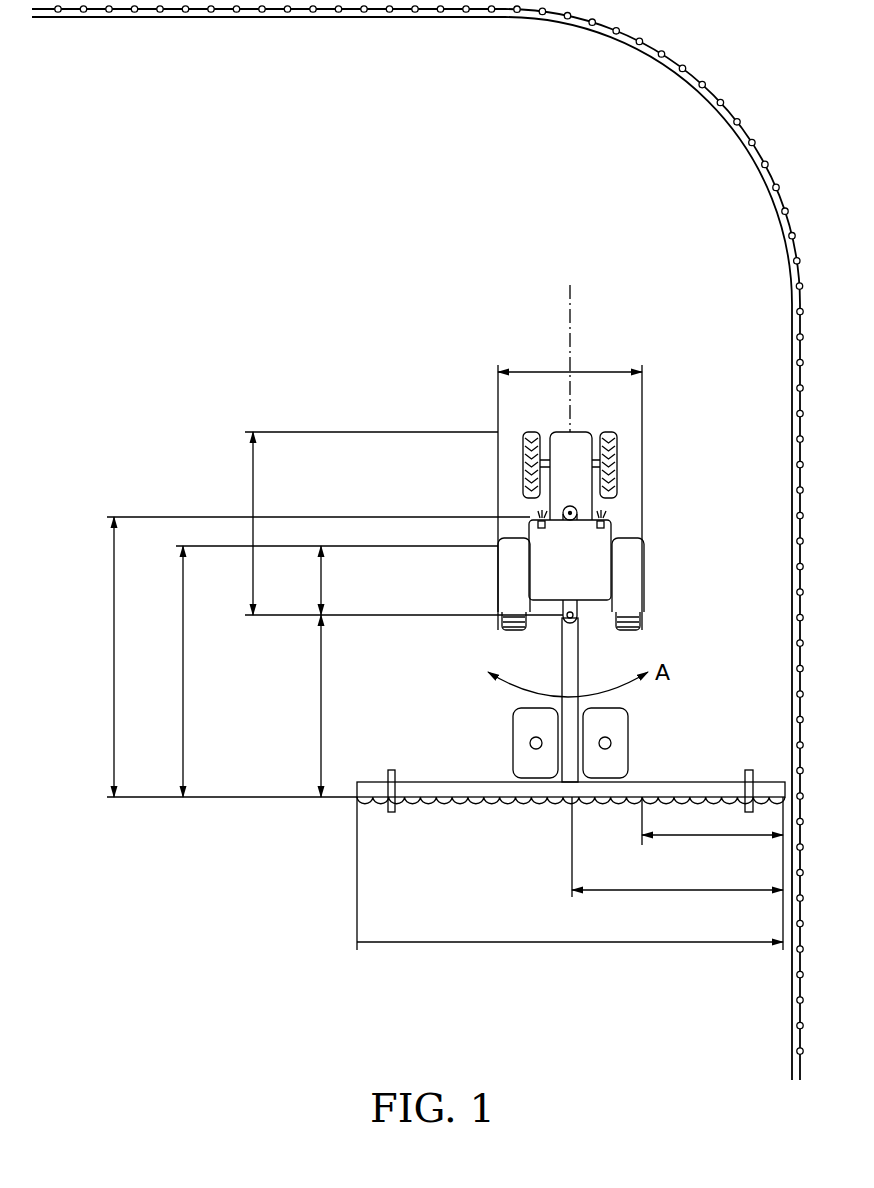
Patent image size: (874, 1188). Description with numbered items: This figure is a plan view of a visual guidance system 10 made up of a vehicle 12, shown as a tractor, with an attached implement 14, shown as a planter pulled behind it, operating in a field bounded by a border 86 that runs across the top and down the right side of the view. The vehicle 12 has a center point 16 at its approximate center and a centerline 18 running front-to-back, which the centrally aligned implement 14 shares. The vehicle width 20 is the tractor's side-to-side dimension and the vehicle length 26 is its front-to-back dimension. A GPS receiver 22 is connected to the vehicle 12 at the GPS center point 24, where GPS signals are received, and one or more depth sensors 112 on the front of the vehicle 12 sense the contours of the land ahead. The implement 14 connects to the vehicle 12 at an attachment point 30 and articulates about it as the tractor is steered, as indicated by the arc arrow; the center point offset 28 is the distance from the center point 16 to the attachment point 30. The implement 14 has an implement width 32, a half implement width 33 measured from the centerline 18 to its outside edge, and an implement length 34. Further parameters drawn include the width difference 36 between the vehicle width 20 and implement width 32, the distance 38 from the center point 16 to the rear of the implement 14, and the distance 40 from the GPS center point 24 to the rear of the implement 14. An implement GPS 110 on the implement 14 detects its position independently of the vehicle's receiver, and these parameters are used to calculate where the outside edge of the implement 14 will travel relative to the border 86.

The visual guidance system 10 is at (118, 281).
The vehicle 12 is at (403, 478).
The implement 14 is at (412, 768).
The center point 16 is at (572, 545).
The centerline 18 is at (572, 324).
The vehicle width 20 is at (556, 371).
The GPS receiver 22 is at (566, 510).
The GPS center point 24 is at (560, 517).
The vehicle length 26 is at (253, 498).
The center point offset 28 is at (321, 580).
The attachment point 30 is at (568, 618).
The implement width 32 is at (570, 942).
The half implement width 33 is at (677, 890).
The implement length 34 is at (321, 705).
The width difference 36 is at (713, 836).
The distance 38 is at (183, 672).
The distance 40 is at (114, 662).
The border 86 is at (792, 352).
The implement GPS 110 is at (570, 790).
The depth sensors 112 is at (604, 525).